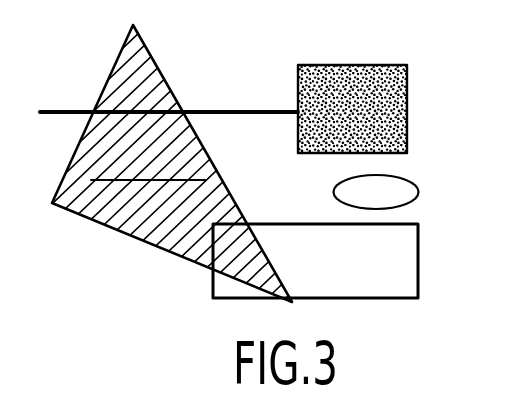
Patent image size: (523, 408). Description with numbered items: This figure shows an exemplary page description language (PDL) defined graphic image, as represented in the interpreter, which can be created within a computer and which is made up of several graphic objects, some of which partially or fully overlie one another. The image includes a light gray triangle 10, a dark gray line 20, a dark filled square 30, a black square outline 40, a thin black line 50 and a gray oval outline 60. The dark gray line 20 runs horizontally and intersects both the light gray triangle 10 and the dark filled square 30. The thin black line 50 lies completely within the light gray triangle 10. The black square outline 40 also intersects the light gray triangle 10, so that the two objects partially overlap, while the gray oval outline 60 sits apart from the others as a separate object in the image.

The light gray triangle 10 is at (150, 72).
The dark gray line 20 is at (202, 110).
The dark filled square 30 is at (394, 123).
The black square outline 40 is at (403, 268).
The thin black line 50 is at (112, 181).
The gray oval outline 60 is at (404, 190).